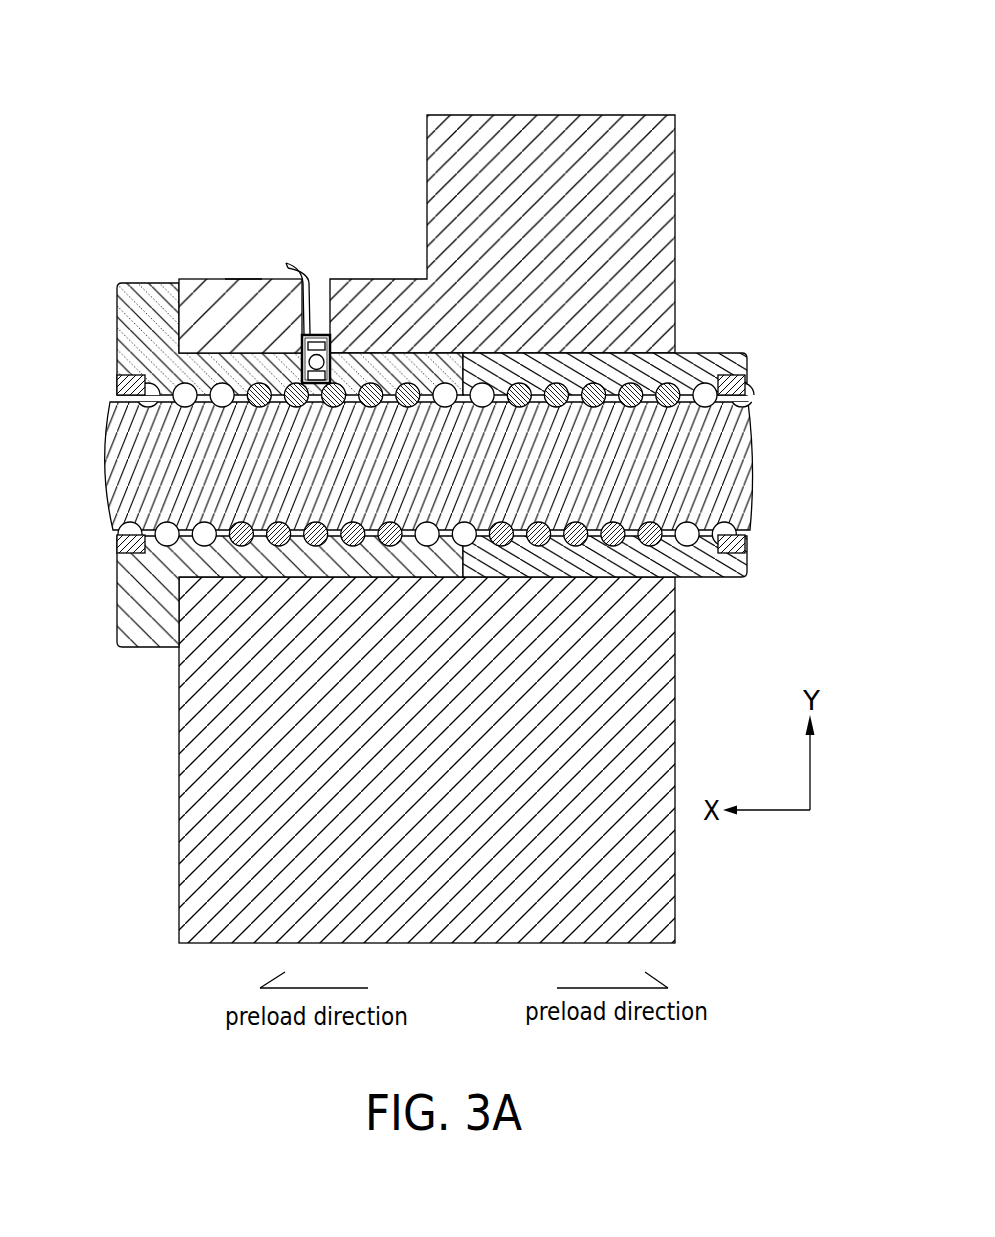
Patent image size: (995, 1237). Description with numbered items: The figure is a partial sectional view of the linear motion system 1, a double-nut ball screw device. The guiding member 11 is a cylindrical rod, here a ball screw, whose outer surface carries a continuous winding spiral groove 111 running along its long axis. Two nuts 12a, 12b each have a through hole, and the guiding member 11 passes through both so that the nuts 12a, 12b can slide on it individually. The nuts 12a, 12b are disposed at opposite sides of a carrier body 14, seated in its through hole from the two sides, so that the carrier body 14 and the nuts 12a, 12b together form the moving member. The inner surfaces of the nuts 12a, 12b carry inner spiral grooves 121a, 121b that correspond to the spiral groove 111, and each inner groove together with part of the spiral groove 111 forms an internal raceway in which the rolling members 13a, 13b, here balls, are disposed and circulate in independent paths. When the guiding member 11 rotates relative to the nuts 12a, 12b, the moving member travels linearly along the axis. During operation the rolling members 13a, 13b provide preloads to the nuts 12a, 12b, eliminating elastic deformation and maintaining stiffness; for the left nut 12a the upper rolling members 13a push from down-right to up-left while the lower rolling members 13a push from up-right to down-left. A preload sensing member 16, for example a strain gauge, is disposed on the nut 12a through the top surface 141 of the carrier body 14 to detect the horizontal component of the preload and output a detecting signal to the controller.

The linear motion system 1 is at (450, 472).
The guiding member 11 is at (110, 429).
The spiral groove 111 is at (142, 395).
The nut 12a is at (247, 456).
The nut 12b is at (665, 462).
The inner spiral groove 121a is at (200, 530).
The inner spiral groove 121b is at (688, 530).
The rolling members 13a is at (228, 527).
The rolling members 13b is at (652, 527).
The carrier body 14 is at (227, 266).
The top surface 141 is at (240, 279).
The preload sensing member 16 is at (320, 316).